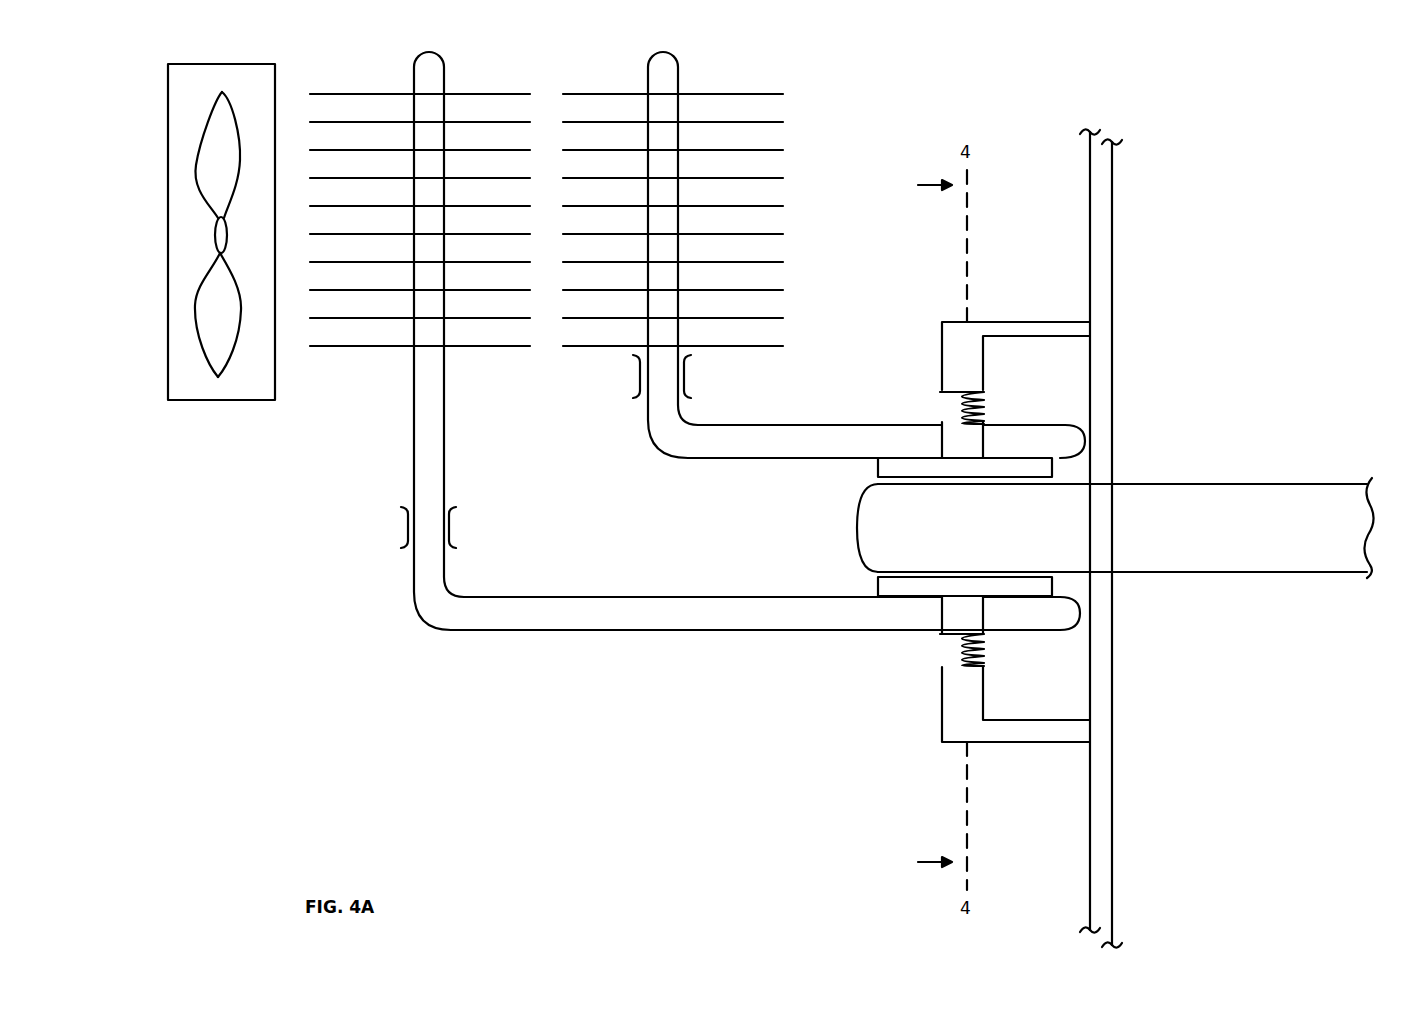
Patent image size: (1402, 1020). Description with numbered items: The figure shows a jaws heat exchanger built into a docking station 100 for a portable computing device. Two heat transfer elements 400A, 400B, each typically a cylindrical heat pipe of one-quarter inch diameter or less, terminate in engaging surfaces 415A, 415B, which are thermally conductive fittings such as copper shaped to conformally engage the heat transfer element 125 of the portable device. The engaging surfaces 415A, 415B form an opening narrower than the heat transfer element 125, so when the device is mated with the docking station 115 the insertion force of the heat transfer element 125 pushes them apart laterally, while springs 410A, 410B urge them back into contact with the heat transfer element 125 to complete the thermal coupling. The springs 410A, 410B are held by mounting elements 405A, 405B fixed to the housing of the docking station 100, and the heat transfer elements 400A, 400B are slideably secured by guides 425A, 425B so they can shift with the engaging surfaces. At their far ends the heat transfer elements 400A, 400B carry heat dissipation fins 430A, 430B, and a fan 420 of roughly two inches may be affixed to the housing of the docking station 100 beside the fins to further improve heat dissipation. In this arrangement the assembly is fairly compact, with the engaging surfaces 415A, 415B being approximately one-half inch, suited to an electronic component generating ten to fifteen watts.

The docking station 100 is at (1082, 146).
The docking station 115 is at (1130, 215).
The heat transfer element 125 is at (1115, 528).
The heat transfer element 400A is at (816, 421).
The heat transfer element 400B is at (790, 634).
The mounting element 405A is at (940, 742).
The mounting element 405B is at (942, 322).
The spring 410A is at (990, 400).
The spring 410B is at (990, 652).
The engaging surface 415A is at (876, 466).
The engaging surface 415B is at (876, 578).
The fan 420 is at (249, 412).
The guide 425A is at (636, 376).
The guide 425B is at (452, 527).
The heat dissipation fins 430A is at (709, 83).
The heat dissipation fins 430B is at (468, 83).